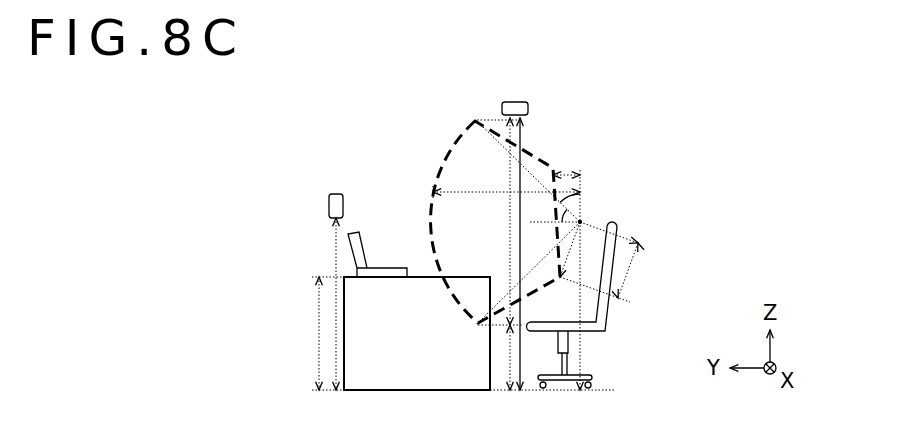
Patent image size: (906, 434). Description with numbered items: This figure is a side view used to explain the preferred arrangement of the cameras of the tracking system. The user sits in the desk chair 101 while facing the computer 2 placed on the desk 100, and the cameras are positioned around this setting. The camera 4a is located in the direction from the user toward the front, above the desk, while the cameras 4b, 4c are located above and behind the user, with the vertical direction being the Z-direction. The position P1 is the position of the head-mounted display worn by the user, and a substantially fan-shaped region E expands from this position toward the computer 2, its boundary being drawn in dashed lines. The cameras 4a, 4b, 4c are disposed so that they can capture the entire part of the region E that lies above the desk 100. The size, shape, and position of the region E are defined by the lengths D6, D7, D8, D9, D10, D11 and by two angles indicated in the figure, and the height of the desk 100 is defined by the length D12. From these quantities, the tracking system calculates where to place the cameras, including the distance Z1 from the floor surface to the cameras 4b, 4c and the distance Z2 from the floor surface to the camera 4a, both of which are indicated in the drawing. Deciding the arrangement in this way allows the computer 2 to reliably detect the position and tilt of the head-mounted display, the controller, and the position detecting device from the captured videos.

The computer 2 is at (382, 267).
The camera 4a is at (336, 193).
The camera 4b is at (512, 84).
The camera 4c is at (511, 101).
The desk 100 is at (344, 300).
The desk chair 101 is at (604, 303).
The region E is at (540, 155).
The position P1 is at (585, 219).
The length D6 is at (510, 358).
The length D7 is at (491, 218).
The length D8 is at (506, 183).
The length D9 is at (567, 173).
The length D10 is at (647, 270).
The length D11 is at (606, 306).
The length D12 is at (293, 333).
The distance Z1 is at (523, 380).
The distance Z2 is at (319, 304).